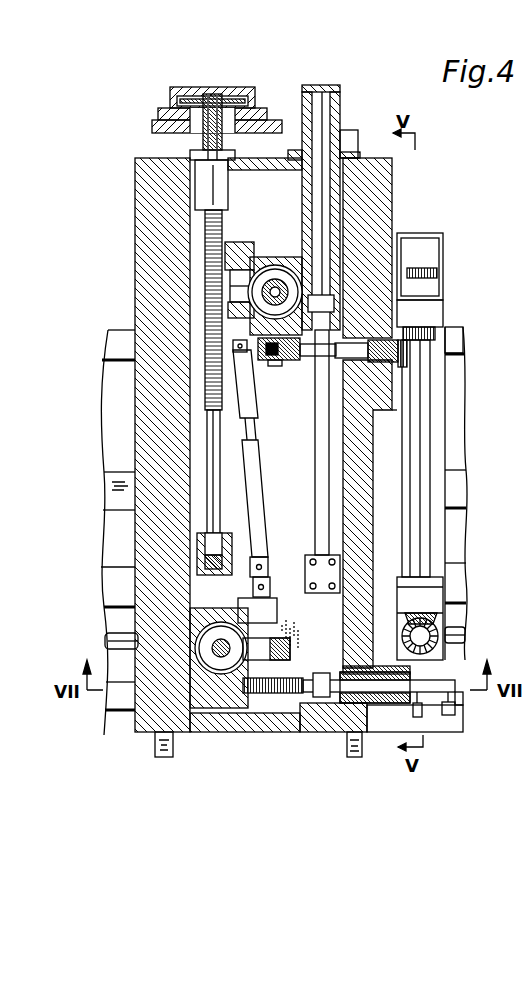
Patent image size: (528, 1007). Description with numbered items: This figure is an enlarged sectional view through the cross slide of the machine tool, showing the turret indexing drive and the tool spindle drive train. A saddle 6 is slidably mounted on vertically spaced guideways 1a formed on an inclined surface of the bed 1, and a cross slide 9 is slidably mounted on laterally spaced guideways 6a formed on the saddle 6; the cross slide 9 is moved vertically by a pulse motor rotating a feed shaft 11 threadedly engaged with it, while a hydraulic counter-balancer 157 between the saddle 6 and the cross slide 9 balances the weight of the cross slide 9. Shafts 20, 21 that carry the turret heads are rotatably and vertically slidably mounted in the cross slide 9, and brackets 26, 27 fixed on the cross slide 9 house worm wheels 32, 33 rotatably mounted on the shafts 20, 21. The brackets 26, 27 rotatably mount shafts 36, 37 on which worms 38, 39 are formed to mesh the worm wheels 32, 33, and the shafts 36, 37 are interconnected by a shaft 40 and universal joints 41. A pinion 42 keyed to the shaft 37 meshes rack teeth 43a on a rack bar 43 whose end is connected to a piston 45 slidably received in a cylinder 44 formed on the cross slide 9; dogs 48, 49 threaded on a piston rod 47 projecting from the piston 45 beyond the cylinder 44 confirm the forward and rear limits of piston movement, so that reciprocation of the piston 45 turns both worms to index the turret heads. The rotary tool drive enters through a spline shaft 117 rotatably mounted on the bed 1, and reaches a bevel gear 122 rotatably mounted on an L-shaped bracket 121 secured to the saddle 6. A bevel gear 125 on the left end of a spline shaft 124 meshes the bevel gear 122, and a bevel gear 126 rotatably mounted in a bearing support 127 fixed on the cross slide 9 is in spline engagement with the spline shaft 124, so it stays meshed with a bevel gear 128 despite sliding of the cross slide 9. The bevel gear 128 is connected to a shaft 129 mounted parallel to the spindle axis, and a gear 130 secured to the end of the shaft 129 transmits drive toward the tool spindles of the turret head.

The bed 1 is at (113, 520).
The guideways 1a is at (112, 488).
The saddle 6 is at (436, 530).
The guideways 6a is at (362, 742).
The cross slide 9 is at (152, 186).
The feed shaft 11 is at (192, 232).
The shaft 20 is at (270, 266).
The shaft 21 is at (160, 740).
The bracket 26 is at (256, 266).
The bracket 27 is at (205, 618).
The worm wheel 32 is at (290, 270).
The worm wheel 33 is at (226, 664).
The shaft 36 is at (232, 284).
The shaft 37 is at (282, 668).
The worm 38 is at (238, 298).
The worm 39 is at (278, 648).
The shaft 40 is at (248, 455).
The universal joints 41 is at (233, 346).
The pinion 42 is at (244, 660).
The rack bar 43 is at (310, 694).
The rack teeth 43a is at (284, 698).
The cylinder 44 is at (390, 704).
The piston 45 is at (400, 678).
The piston rod 47 is at (420, 718).
The dog 48 is at (448, 716).
The dog 49 is at (460, 706).
The spline shaft 117 is at (108, 640).
The L-shaped bracket 121 is at (447, 570).
The bevel gear 122 is at (438, 632).
The spline shaft 124 is at (422, 394).
The bevel gear 125 is at (432, 618).
The bevel gear 126 is at (438, 336).
The bearing support 127 is at (430, 300).
The bevel gear 128 is at (420, 354).
The shaft 129 is at (345, 352).
The gear 130 is at (282, 366).
The hydraulic counter-balancer 157 is at (347, 134).